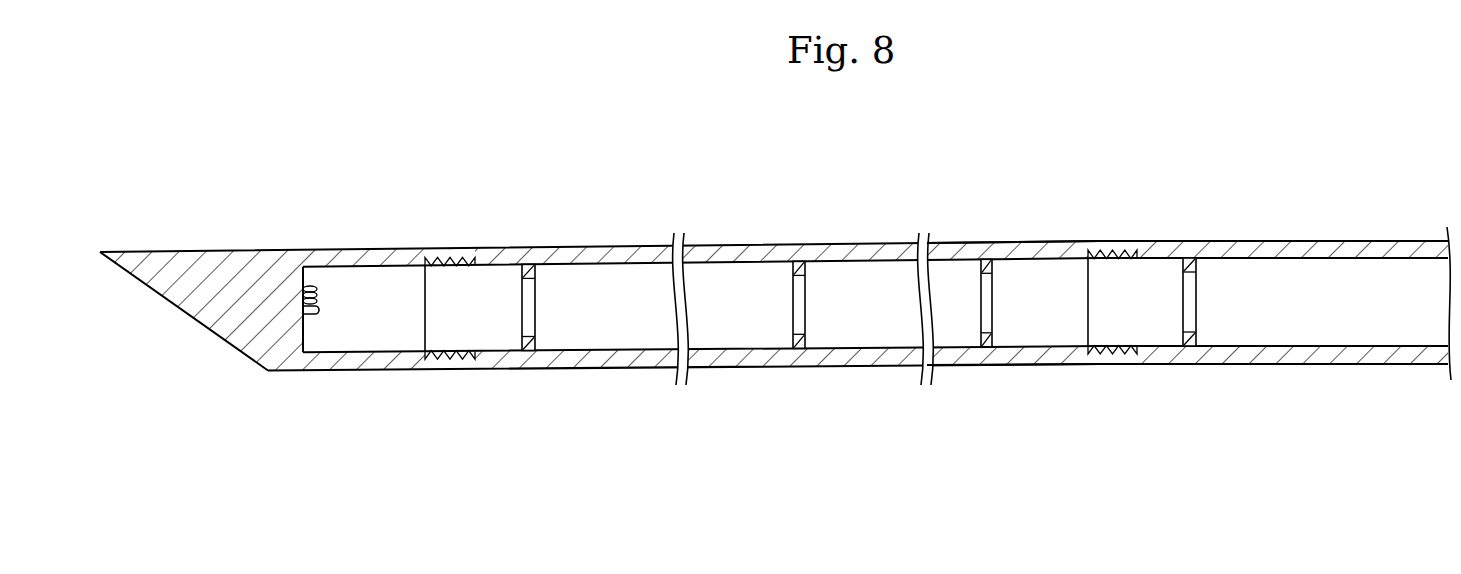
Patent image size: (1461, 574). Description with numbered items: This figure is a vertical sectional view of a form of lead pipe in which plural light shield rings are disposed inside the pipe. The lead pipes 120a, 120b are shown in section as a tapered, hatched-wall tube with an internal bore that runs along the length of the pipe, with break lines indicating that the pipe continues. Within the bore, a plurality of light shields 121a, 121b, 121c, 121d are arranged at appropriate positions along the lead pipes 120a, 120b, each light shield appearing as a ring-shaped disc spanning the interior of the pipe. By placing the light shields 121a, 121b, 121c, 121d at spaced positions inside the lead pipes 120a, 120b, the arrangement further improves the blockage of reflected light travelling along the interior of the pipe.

The lead pipe 120a is at (635, 368).
The lead pipe 120b is at (1318, 364).
The light shield 121a is at (505, 369).
The light shield 121b is at (807, 343).
The light shield 121c is at (978, 341).
The light shield 121d is at (1180, 339).